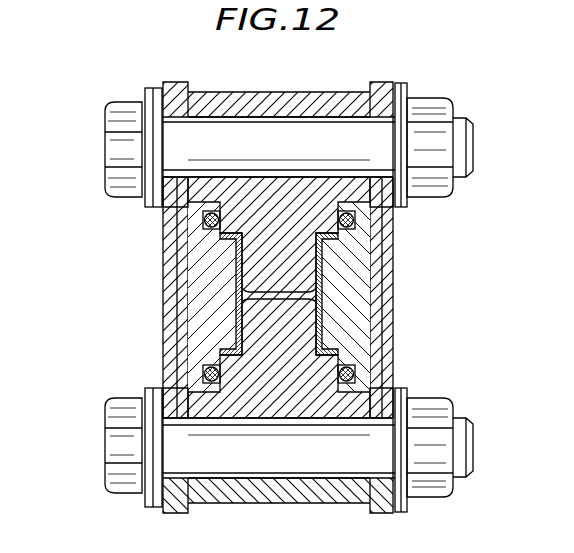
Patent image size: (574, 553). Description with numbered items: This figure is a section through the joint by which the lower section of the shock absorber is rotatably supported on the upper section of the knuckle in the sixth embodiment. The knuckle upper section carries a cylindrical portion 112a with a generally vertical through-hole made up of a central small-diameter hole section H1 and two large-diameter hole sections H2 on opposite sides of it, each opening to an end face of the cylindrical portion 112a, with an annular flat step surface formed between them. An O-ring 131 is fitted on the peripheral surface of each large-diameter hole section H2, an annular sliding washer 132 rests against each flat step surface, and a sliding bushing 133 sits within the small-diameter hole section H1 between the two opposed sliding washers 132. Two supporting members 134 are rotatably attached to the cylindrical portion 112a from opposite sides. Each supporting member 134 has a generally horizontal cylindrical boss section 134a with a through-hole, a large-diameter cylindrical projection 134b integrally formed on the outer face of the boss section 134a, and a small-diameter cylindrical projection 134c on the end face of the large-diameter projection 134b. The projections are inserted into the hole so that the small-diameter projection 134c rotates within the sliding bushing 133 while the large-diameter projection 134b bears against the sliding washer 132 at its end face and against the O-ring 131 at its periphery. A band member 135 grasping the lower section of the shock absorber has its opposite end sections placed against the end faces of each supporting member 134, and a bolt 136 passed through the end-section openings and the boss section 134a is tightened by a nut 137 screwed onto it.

The piston body 112a is at (205, 288).
The O-ring 131 is at (340, 203).
The annular sliding washer 132 is at (358, 222).
The sliding bushing 133 is at (320, 280).
The supporting member 134 is at (302, 88).
The cylindrical boss section 134a is at (228, 92).
The large-diameter cylindrical projection 134b is at (193, 207).
The small-diameter cylindrical projection 134c is at (238, 264).
The band member 135 is at (165, 311).
The bolt 136 is at (122, 148).
The nut 137 is at (432, 100).
The small-diameter hole section H1 is at (318, 257).
The large-diameter hole section H2 is at (400, 205).